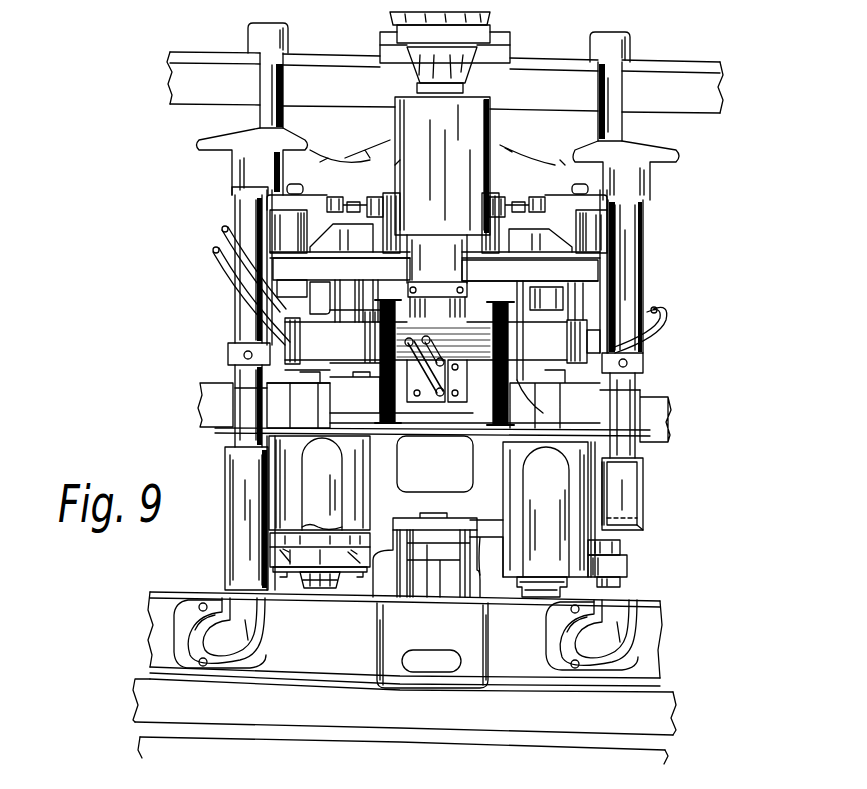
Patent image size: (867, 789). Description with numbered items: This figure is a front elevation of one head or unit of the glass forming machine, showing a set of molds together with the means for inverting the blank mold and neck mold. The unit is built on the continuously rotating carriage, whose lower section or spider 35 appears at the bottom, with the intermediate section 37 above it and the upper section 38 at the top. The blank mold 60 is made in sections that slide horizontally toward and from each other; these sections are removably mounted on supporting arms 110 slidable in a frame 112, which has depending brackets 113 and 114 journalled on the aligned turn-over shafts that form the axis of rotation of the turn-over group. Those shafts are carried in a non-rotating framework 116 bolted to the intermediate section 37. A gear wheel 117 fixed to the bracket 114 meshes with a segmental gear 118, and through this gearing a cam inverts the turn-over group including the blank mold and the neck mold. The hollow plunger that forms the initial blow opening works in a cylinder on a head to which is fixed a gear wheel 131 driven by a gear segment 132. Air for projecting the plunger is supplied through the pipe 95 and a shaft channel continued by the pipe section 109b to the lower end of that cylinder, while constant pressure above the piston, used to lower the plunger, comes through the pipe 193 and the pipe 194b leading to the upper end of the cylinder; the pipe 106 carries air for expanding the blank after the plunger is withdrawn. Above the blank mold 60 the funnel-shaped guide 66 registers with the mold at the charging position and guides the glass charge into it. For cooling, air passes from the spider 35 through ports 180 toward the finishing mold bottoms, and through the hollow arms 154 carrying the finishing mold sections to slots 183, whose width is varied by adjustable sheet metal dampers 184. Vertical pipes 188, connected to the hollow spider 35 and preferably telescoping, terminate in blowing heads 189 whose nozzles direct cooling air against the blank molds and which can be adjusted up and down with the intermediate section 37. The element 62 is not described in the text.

The lower section or spider 35 is at (655, 643).
The intermediate section 37 is at (658, 420).
The upper section 38 is at (195, 95).
The blank mold 60 is at (473, 113).
The cylinders 62 is at (512, 494).
The funnel-shaped guide 66 is at (492, 18).
The pipe 95 is at (213, 260).
The pipe 106 is at (640, 337).
The pipe section 109b is at (388, 445).
The supporting arms 110 is at (437, 221).
The frame 112 is at (587, 280).
The depending bracket 113 is at (350, 370).
The depending bracket 114 is at (555, 399).
The non-rotating framework 116 is at (583, 313).
The gear wheel 117 is at (535, 310).
The segmental gear 118 is at (527, 400).
The gear wheel 131 is at (388, 297).
The gear segment 132 is at (415, 440).
The hollow arms 154 is at (627, 563).
The ports 180 is at (432, 660).
The slots 183 is at (322, 580).
The dampers 184 is at (340, 567).
The vertical pipes 188 is at (240, 550).
The blowing heads 189 is at (657, 153).
The pipe 193 is at (224, 232).
The pipe 194b is at (413, 353).